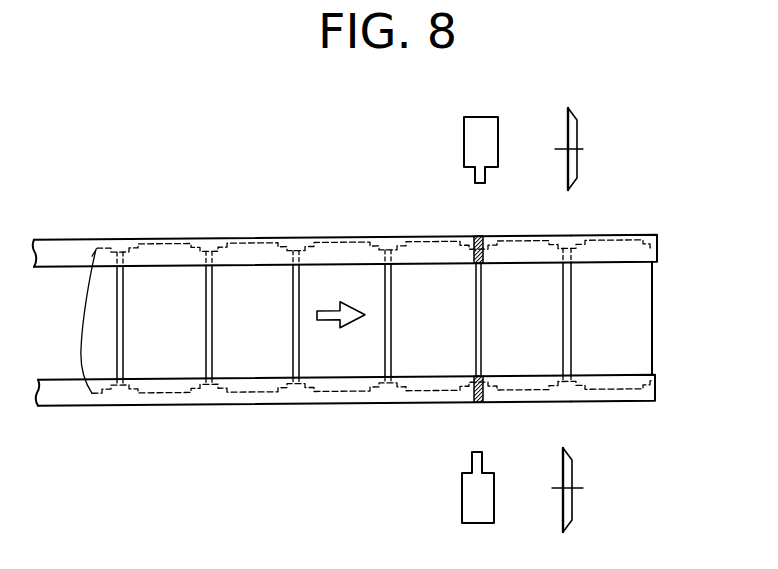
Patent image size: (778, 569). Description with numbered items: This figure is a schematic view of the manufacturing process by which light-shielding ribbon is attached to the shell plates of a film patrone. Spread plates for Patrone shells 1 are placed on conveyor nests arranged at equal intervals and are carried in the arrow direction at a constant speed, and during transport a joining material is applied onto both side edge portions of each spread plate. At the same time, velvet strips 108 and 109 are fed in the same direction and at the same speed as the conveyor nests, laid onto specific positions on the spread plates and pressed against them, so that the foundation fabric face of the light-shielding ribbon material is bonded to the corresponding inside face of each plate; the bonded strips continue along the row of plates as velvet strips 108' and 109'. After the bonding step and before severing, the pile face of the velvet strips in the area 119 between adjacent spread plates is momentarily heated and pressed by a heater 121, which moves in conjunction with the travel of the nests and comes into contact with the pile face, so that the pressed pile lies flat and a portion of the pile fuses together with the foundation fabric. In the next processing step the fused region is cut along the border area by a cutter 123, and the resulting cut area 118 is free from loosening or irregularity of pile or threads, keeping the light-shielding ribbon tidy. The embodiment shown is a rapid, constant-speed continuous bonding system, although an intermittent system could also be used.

The Patrone shell 1 is at (163, 363).
The velvet strip 108 is at (302, 218).
The velvet strip 108' is at (640, 220).
The velvet strip 109 is at (302, 425).
The velvet strip 109' is at (643, 417).
The cut area 118 is at (576, 234).
The area between adjacent spread plates 119 is at (482, 232).
The heater 121 is at (478, 124).
The cutter 123 is at (577, 131).